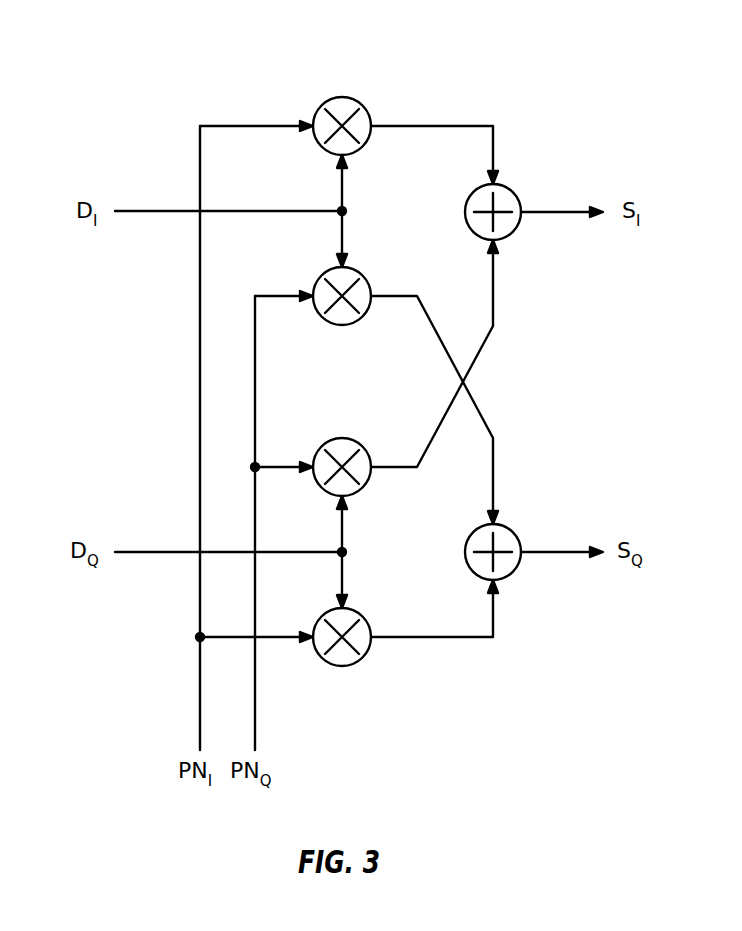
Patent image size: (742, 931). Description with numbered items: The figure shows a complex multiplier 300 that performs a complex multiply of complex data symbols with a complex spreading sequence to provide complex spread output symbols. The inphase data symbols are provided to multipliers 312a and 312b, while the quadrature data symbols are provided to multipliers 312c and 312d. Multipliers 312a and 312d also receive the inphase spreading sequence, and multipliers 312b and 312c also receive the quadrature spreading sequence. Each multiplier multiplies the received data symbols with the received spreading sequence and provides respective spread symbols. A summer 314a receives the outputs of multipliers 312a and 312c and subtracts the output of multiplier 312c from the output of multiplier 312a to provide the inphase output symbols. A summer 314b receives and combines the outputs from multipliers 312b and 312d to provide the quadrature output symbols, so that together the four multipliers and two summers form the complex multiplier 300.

The complex multiplier 300 is at (686, 42).
The multiplier 312a is at (364, 113).
The multiplier 312b is at (364, 283).
The multiplier 312c is at (364, 454).
The multiplier 312d is at (364, 624).
The summer 314a is at (515, 199).
The summer 314b is at (515, 539).